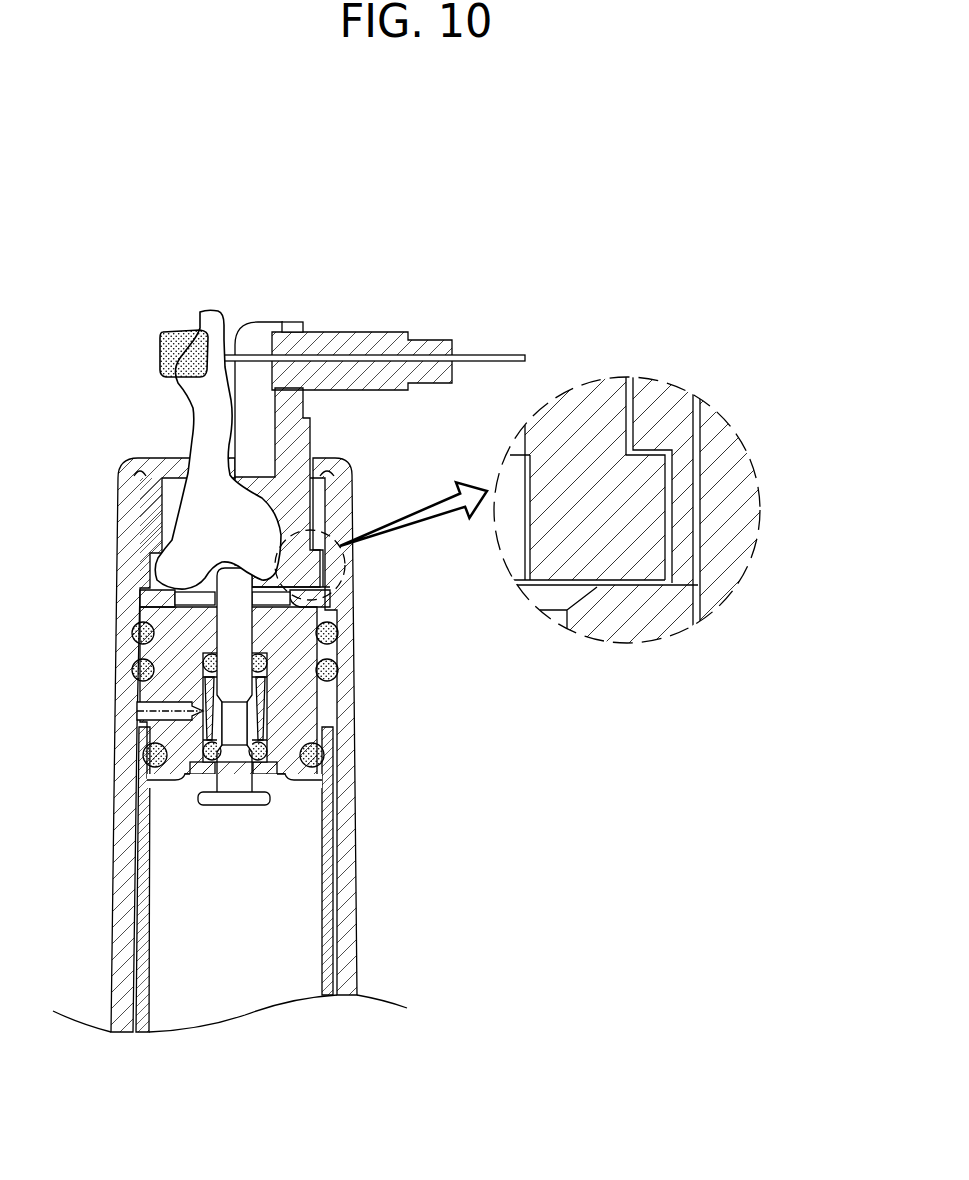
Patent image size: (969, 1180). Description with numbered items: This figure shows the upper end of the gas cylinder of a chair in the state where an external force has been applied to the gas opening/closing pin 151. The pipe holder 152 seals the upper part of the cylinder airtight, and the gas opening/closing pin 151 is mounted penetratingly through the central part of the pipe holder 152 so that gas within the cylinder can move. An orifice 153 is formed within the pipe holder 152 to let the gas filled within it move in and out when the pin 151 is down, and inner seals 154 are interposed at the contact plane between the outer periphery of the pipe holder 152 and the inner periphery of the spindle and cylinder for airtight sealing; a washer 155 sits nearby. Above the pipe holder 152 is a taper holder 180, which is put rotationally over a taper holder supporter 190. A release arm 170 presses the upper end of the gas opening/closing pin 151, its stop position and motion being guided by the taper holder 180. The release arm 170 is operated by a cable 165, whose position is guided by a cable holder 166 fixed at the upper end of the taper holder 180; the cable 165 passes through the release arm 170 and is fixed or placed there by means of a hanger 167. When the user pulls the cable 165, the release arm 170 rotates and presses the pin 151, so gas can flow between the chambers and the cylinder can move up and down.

The gas opening/closing pin 151 is at (245, 580).
The pipe holder 152 is at (303, 702).
The orifice 153 is at (148, 712).
The inner seal 154 is at (140, 668).
The washer 155 is at (320, 598).
The cable 165 is at (495, 357).
The cable holder 166 is at (357, 332).
The hanger 167 is at (163, 360).
The release arm 170 is at (201, 325).
The taper holder 180 is at (310, 428).
The taper holder supporter 190 is at (153, 505).